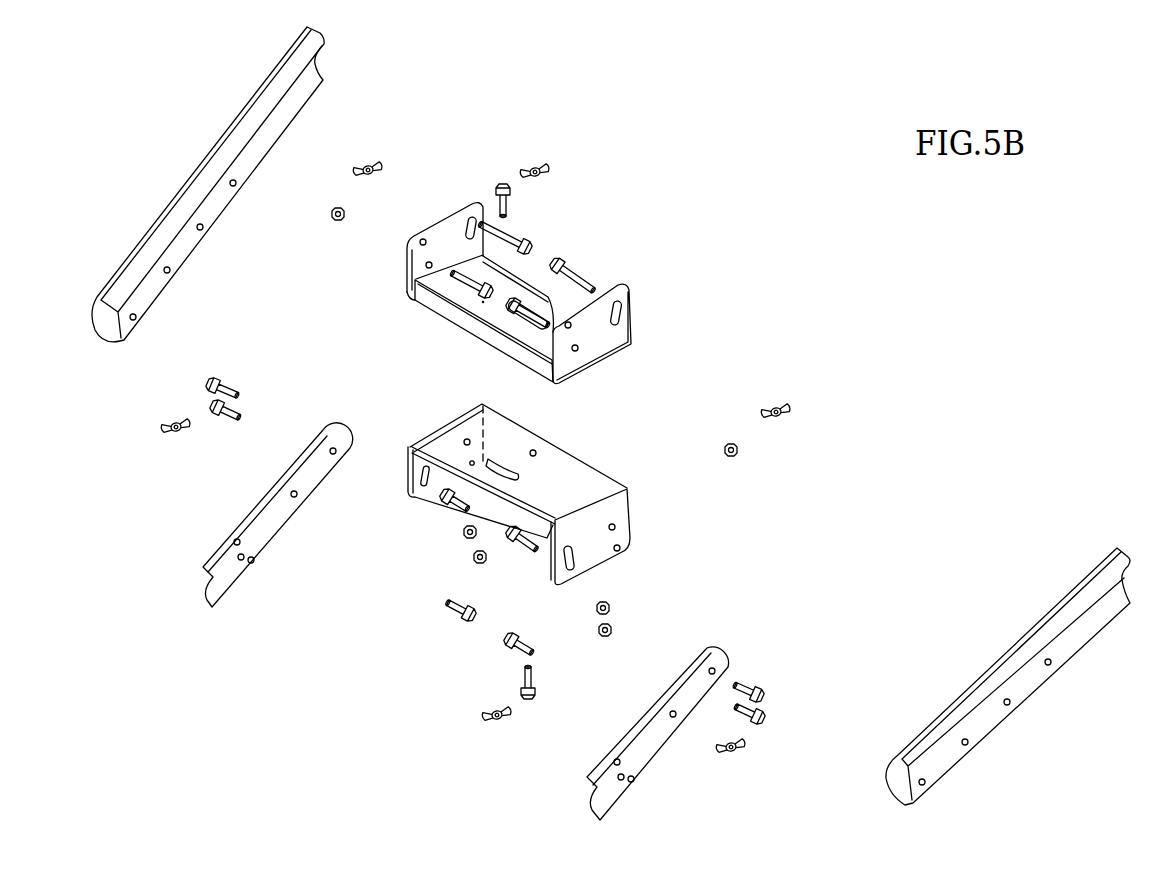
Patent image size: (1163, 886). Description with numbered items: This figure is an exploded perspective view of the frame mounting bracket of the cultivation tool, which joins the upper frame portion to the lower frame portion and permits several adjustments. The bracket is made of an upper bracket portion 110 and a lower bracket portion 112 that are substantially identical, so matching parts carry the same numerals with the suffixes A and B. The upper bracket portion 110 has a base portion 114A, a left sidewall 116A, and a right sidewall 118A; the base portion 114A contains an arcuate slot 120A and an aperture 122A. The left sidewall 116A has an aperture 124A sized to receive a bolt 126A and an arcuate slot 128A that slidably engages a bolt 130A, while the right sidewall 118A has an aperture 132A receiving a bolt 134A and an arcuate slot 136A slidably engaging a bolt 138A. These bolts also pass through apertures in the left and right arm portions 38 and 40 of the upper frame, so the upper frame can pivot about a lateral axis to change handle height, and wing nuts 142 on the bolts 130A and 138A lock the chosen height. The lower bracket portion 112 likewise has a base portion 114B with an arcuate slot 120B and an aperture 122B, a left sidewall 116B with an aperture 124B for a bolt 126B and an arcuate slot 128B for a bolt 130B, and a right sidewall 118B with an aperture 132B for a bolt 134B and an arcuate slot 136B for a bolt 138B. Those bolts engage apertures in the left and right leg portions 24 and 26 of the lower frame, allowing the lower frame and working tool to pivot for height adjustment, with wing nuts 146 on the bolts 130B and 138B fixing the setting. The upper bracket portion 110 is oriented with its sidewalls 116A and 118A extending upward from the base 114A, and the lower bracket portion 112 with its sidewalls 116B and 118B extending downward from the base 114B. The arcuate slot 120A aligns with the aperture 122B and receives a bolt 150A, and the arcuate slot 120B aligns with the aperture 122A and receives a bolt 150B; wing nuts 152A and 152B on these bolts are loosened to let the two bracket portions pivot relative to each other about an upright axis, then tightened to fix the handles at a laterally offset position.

The left leg portion 24 is at (648, 738).
The right leg portion 26 is at (265, 525).
The left arm portion 38 is at (1040, 630).
The right arm portion 40 is at (190, 195).
The upper bracket portion 110 is at (484, 226).
The lower bracket portion 112 is at (501, 536).
The base portion 114A is at (492, 278).
The base portion 114B is at (483, 456).
The left sidewall 116A is at (636, 328).
The left sidewall 116B is at (636, 586).
The right sidewall 118A is at (379, 172).
The right sidewall 118B is at (380, 565).
The arcuate slot 120A is at (540, 310).
The arcuate slot 120B is at (512, 468).
The aperture 122A is at (492, 303).
The aperture 122B is at (537, 453).
The aperture 124A is at (577, 350).
The aperture 124B is at (616, 527).
The bolt 126A is at (527, 315).
The bolt 126B is at (517, 653).
The arcuate slot 128A is at (616, 318).
The arcuate slot 128B is at (575, 570).
The bolt 130A is at (580, 278).
The bolt 130B is at (530, 548).
The aperture 132A is at (428, 262).
The aperture 132B is at (464, 440).
The bolt 134A is at (478, 292).
The bolt 134B is at (448, 605).
The arcuate slot 136A is at (472, 217).
The arcuate slot 136B is at (420, 472).
The bolt 138A is at (503, 235).
The bolt 138B is at (445, 508).
The wing nuts 142 is at (367, 163).
The wing nuts 146 is at (176, 424).
The bolt 150A is at (535, 700).
The bolt 150B is at (503, 183).
The wing nut 152A is at (530, 165).
The wing nut 152B is at (505, 722).